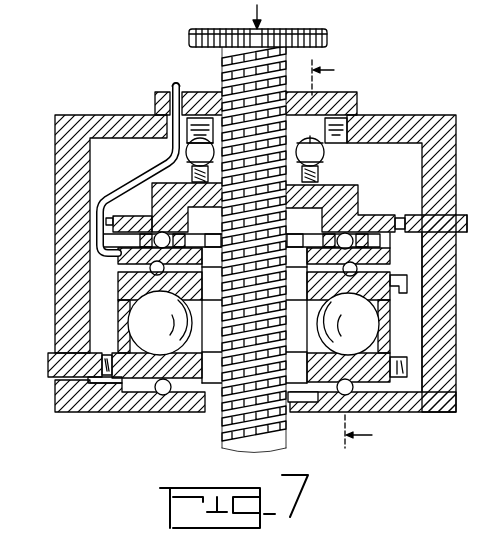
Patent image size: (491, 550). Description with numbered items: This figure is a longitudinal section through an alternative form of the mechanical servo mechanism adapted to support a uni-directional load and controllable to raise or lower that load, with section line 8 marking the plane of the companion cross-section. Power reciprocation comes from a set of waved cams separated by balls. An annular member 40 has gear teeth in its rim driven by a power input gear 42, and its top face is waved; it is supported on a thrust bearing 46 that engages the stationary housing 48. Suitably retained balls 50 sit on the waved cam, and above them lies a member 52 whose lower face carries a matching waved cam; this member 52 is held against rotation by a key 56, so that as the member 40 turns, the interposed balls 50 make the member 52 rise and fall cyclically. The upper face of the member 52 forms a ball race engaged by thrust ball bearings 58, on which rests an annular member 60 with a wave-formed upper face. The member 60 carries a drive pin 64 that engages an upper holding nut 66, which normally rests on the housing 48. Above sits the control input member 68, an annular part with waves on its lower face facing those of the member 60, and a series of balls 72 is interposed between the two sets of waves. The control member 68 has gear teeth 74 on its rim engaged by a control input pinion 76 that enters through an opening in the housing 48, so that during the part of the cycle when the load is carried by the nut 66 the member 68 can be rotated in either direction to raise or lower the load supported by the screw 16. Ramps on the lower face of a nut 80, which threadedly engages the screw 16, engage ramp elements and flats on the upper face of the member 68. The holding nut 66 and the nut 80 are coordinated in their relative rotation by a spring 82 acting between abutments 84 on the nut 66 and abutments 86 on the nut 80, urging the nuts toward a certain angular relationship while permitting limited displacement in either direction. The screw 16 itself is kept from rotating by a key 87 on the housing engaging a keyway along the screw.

The section line 8- 8 is at (353, 256).
The screw 16 is at (222, 440).
The annular member 40 is at (103, 410).
The power input gear 42 is at (44, 357).
The thrust bearing 46 is at (158, 411).
The stationary housing 48 is at (437, 412).
The balls 50 is at (253, 323).
The member 52 is at (120, 292).
The key 56 is at (404, 291).
The thrust ball bearings 58 is at (149, 269).
The annular member 60 is at (385, 264).
The drive pin 64 is at (171, 88).
The upper holding nut 66 is at (357, 98).
The control input member 68 is at (388, 217).
The balls 72 is at (366, 242).
The gear teeth 74 is at (365, 206).
The control input pinion 76 is at (474, 213).
The nut 80 is at (346, 188).
The spring 82 is at (325, 151).
The abutments 84 is at (320, 130).
The abutments 86 is at (322, 170).
The key 87 is at (287, 406).